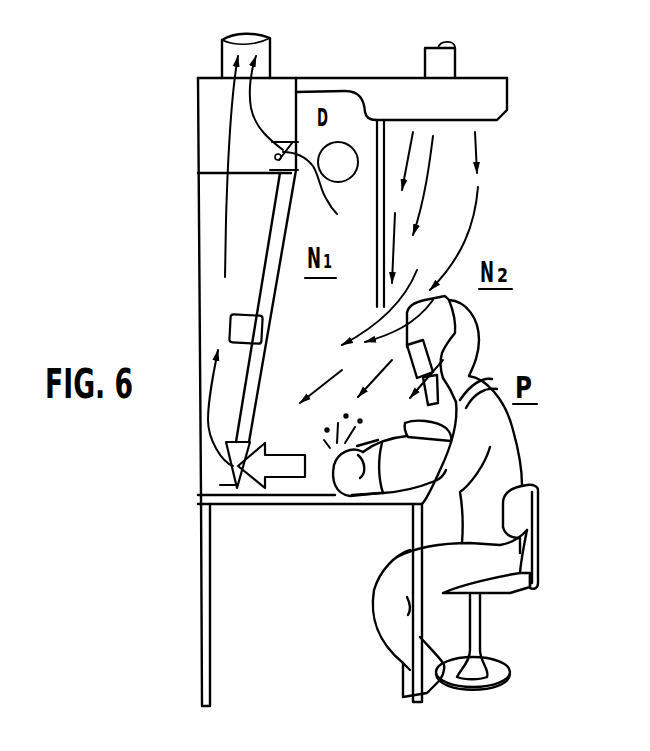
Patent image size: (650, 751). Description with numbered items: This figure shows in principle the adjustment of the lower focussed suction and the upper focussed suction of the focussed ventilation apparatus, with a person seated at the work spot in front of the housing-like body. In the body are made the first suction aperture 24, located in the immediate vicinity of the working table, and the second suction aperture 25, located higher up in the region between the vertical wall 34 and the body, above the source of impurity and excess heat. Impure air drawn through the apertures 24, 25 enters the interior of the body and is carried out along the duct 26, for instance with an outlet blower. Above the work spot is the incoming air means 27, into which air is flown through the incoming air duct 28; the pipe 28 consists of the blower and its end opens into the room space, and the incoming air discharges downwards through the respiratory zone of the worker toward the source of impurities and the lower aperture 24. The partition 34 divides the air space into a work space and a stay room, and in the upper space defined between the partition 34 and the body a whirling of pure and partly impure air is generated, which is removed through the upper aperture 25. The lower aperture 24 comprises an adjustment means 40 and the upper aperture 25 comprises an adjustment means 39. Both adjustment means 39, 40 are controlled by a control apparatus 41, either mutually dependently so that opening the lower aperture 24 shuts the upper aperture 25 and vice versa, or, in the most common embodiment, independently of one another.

The first suction aperture 24 is at (244, 478).
The second suction aperture 25 is at (295, 145).
The duct 26 is at (230, 53).
The incoming air means 27 is at (519, 77).
The incoming air duct 28 is at (450, 60).
The vertical wall 34 is at (366, 108).
The adjustment means 39 is at (283, 152).
The adjustment means 40 is at (237, 460).
The control apparatus 41 is at (258, 288).